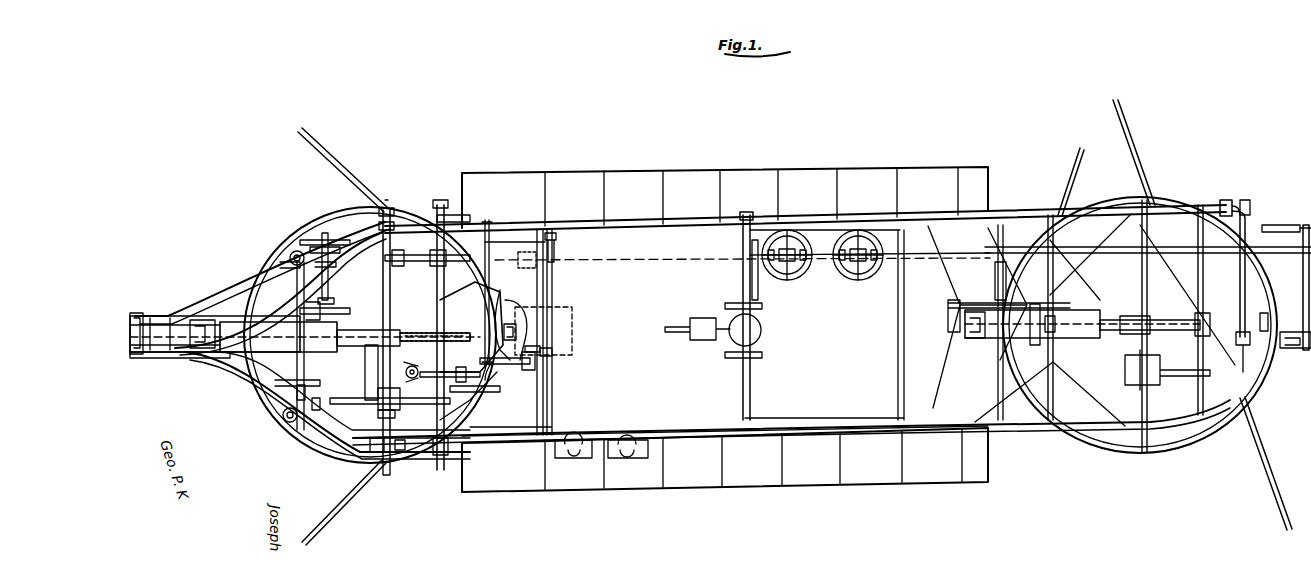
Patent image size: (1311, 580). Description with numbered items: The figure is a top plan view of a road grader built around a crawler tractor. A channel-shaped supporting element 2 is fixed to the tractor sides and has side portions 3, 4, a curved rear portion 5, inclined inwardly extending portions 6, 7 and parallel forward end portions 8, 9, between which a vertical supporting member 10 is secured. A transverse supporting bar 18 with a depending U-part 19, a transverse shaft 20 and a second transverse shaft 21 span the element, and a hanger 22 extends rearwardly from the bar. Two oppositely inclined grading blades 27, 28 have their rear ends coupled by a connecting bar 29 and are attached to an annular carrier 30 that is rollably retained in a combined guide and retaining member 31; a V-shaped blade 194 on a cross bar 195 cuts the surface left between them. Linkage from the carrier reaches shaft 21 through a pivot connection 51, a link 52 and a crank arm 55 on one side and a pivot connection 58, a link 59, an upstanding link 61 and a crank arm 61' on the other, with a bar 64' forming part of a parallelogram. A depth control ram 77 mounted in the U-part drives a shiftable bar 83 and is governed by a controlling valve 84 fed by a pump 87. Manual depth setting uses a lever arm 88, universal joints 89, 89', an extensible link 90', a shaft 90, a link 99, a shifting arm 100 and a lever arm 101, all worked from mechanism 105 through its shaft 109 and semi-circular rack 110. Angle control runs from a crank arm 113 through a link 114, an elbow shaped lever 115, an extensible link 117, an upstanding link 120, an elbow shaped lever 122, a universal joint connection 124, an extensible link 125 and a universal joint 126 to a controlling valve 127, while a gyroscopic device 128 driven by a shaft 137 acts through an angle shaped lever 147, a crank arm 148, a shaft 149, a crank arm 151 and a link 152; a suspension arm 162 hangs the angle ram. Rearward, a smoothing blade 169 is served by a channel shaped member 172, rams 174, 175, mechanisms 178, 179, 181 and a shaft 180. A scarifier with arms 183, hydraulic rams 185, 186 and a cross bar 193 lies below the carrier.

The supporting element 2 is at (820, 440).
The side portion 3 is at (637, 215).
The side portion 4 is at (705, 440).
The curved rear portion 5 is at (1266, 288).
The inclined inwardly extending portion 6 is at (258, 290).
The inclined inwardly extending portion 7 is at (285, 395).
The straight forward end portion 8 is at (158, 316).
The straight forward end portion 9 is at (160, 358).
The supporting member 10 is at (136, 315).
The transverse supporting bar 18 is at (306, 400).
The depending U-part 19 is at (368, 362).
The transverse shaft 20 is at (205, 355).
The transverse shaft 21 is at (452, 220).
The hanger 22 is at (300, 302).
The grading blade 27 is at (322, 152).
The grading blade 28 is at (322, 522).
The connecting bar 29 is at (472, 293).
The carrier 30 is at (300, 240).
The combined guide and retaining member 31 is at (520, 330).
The pivot connection 51 is at (392, 216).
The link 52 is at (400, 228).
The crank arm 55 is at (432, 256).
The pivot connection 58 is at (388, 452).
The link 59 is at (374, 452).
The upstanding link 61 is at (396, 464).
The crank arm 61' is at (440, 483).
The bar 64' is at (367, 408).
The depth control ram 77 is at (238, 345).
The shiftable bar 83 is at (425, 338).
The controlling valve 84 is at (292, 352).
The pump 87 is at (560, 460).
The lever arm 88 is at (345, 308).
The universal joint 89 is at (382, 316).
The universal joint 89' is at (372, 173).
The shaft 90 is at (325, 242).
The lengthwise extensible oscillatory link 90' is at (329, 292).
The link 99 is at (290, 262).
The shifting arm 100 is at (285, 305).
The lever arm 101 is at (330, 250).
The mechanism 105 is at (800, 235).
The shaft 109 is at (681, 262).
The semi-circular rack 110 is at (1255, 430).
The crank arm 113 is at (556, 238).
The link 114 is at (500, 311).
The elbow shaped lever 115 is at (545, 353).
The oscillatory lengthwise extensible link 117 is at (530, 346).
The upstanding link 120 is at (478, 368).
The elbow shaped lever 122 is at (500, 365).
The universal joint connection 124 is at (480, 388).
The oscillatory lengthwise extensible link 125 is at (432, 360).
The universal joint 126 is at (400, 392).
The controlling valve 127 is at (400, 402).
The gyroscopic device 128 is at (763, 330).
The shaft 137 is at (675, 340).
The angle shaped lever 147 is at (755, 290).
The crank arm 148 is at (745, 215).
The shaft 149 is at (540, 232).
The crank arm 151 is at (489, 225).
The link 152 is at (510, 300).
The suspension arm 162 is at (335, 427).
The smoothing blade 169 is at (1070, 162).
The channel shaped member 172 is at (965, 338).
The ram 174 is at (1085, 318).
The ram 175 is at (1150, 370).
The mechanism 178 is at (1236, 336).
The mechanism 179 is at (1302, 232).
The shaft 180 is at (1258, 250).
The mechanism 181 is at (1172, 318).
The arm 183 is at (606, 460).
The hydraulic ram 185 is at (300, 400).
The hydraulic ram 186 is at (290, 248).
The cross bar 193 is at (275, 382).
The V-shaped blade 194 is at (478, 410).
The cross bar 195 is at (400, 448).